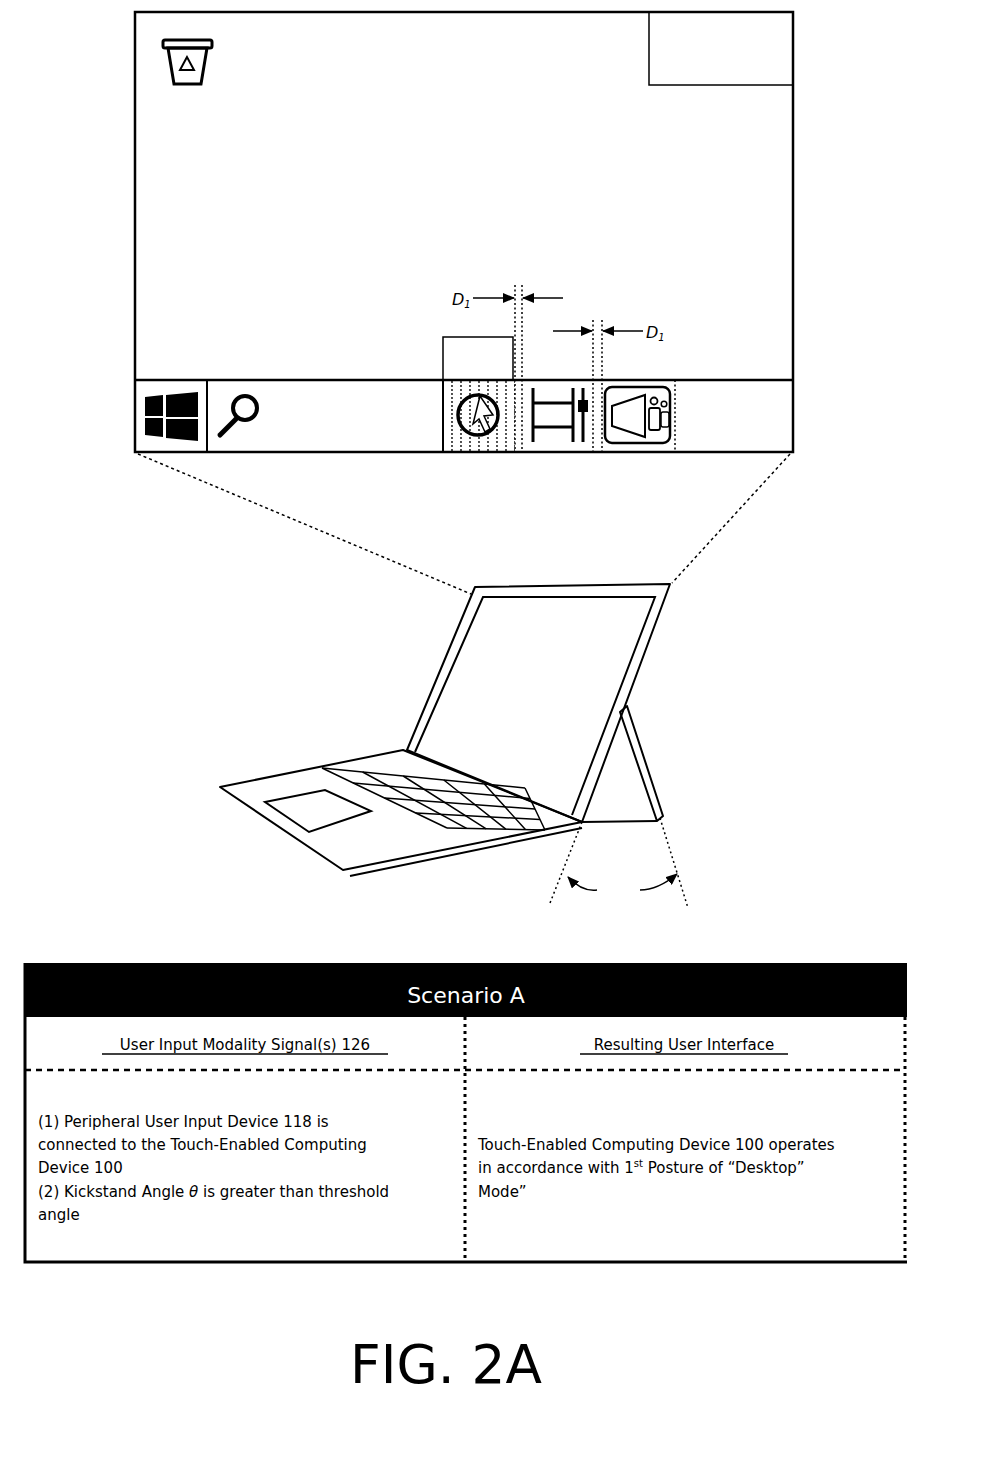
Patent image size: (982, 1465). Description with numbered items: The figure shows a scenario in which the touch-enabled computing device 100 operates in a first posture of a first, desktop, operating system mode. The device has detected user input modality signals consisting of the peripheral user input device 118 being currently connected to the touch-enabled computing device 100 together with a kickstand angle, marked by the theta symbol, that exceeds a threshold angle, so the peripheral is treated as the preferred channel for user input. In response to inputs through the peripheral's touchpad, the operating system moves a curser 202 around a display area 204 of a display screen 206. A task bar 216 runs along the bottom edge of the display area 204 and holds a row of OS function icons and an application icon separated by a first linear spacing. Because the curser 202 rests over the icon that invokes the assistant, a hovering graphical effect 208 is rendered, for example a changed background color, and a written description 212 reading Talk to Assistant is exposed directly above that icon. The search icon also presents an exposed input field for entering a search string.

The touch-enabled computing device 100 is at (578, 746).
The peripheral user input device 118 is at (257, 781).
The curser 202 is at (489, 437).
The display area 204 is at (135, 152).
The display screen 206 is at (543, 701).
The hovering graphical effect 208 is at (433, 367).
The written description 212 is at (445, 337).
The task bar 216 is at (253, 379).